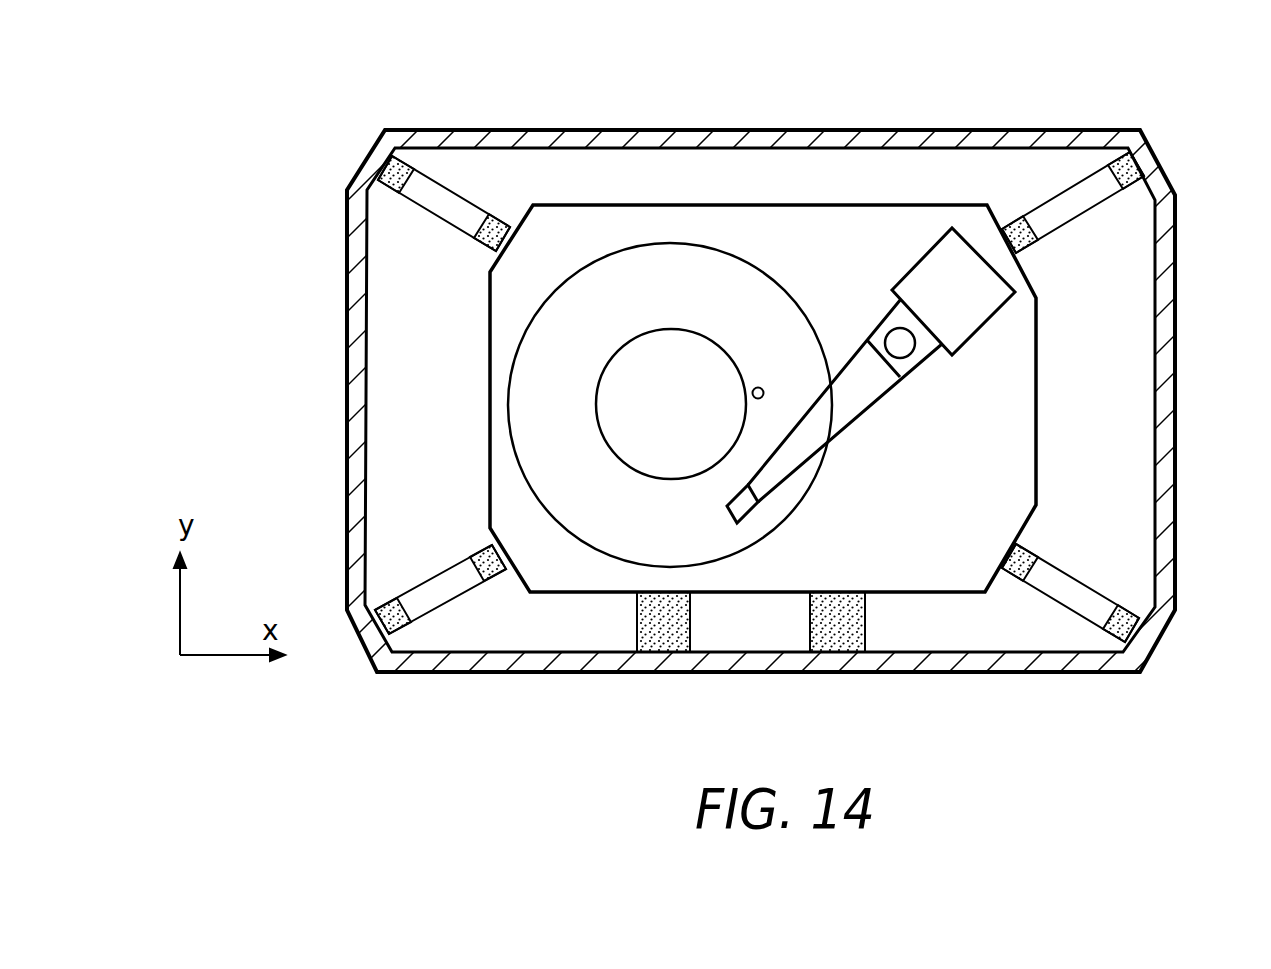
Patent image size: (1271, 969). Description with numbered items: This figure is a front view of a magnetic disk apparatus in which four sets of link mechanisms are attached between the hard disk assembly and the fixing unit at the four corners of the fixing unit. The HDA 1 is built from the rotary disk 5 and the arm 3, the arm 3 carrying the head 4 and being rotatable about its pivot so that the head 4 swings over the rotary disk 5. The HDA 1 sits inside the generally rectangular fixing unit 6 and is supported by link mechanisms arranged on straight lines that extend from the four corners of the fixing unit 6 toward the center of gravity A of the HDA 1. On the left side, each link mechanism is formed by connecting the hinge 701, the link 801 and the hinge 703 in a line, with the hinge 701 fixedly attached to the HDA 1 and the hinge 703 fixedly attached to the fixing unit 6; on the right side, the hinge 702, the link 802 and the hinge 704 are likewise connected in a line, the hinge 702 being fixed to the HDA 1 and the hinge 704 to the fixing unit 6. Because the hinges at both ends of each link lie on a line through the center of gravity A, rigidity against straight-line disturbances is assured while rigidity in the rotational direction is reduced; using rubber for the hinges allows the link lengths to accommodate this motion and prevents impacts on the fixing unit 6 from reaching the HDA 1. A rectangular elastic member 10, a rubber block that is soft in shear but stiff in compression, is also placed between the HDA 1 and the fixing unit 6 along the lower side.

The HDA 1 is at (953, 572).
The arm 3 is at (862, 378).
The head 4 is at (742, 505).
The rotary disk 5 is at (681, 243).
The fixing unit 6 is at (586, 130).
The elastic member 10 is at (677, 640).
The hinge 701 is at (503, 224).
The hinge 702 is at (1013, 223).
The hinge 703 is at (401, 150).
The hinge 704 is at (1112, 160).
The link 801 is at (443, 183).
The link 802 is at (1072, 193).
The center of gravity A is at (760, 417).